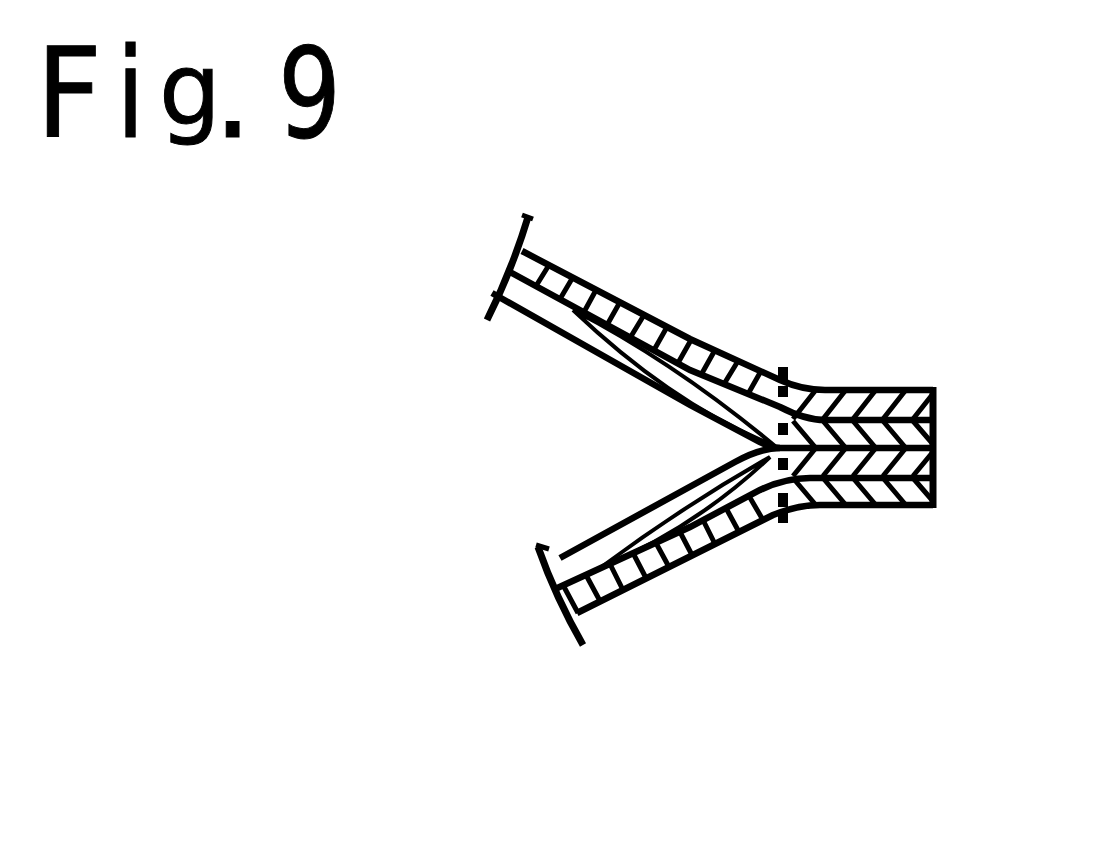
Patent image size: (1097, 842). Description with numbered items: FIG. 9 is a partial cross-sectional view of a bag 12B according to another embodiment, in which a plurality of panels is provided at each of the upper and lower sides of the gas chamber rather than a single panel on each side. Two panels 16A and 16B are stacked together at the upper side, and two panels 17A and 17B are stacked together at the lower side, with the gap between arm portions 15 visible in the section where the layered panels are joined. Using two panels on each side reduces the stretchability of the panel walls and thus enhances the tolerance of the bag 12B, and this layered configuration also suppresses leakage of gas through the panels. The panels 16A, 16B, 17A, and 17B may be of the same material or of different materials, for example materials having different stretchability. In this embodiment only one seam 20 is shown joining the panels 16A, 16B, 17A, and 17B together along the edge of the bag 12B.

The bag 12B is at (709, 210).
The gap between arm portions 15 is at (618, 441).
The panel 16A is at (585, 283).
The panel 16B is at (550, 329).
The panel 17A is at (641, 581).
The panel 17B is at (619, 527).
The seam 20 is at (784, 372).